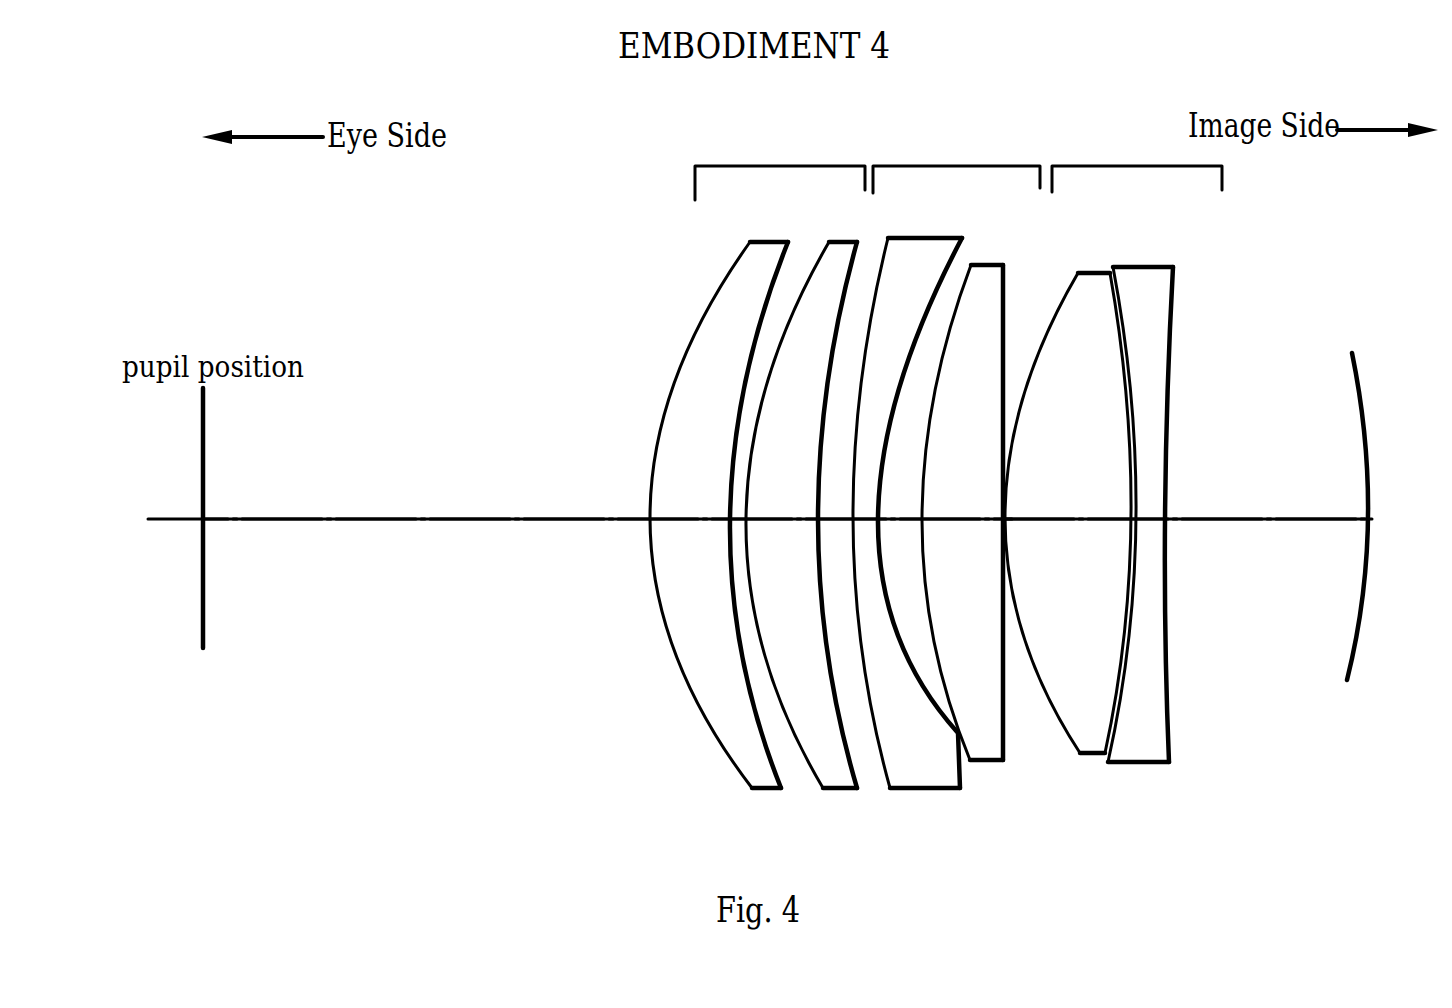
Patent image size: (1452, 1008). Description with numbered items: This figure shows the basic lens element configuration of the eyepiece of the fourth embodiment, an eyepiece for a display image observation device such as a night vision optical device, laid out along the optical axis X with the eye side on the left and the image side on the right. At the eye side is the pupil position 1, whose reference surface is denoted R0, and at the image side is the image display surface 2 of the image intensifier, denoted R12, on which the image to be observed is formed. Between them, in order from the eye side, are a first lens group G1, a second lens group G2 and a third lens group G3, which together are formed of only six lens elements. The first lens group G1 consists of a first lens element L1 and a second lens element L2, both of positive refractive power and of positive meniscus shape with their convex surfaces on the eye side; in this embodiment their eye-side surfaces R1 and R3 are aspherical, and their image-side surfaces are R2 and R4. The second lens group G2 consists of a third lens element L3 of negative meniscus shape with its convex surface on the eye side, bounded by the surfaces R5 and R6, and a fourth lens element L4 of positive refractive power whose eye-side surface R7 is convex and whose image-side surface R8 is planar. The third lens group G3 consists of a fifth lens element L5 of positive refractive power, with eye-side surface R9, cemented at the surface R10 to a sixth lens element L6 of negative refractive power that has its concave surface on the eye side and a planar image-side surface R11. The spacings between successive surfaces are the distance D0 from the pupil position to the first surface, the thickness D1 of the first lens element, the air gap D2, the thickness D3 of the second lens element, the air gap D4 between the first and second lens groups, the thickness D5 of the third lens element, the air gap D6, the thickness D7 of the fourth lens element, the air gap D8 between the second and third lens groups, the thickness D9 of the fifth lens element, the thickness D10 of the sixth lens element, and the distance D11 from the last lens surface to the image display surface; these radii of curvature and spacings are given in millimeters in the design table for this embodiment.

The pupil position (eye point) 1 is at (242, 513).
The image display surface 2 is at (1326, 516).
The optical axis X is at (500, 523).
The first lens group G1 is at (755, 454).
The second lens group G2 is at (953, 454).
The third lens group G3 is at (1125, 441).
The first lens element L1 is at (716, 486).
The second lens element L2 is at (803, 485).
The third lens element L3 is at (917, 483).
The fourth lens element L4 is at (988, 469).
The fifth lens element L5 is at (1125, 468).
The sixth lens element L6 is at (1177, 473).
The radius of curvature of the pupil-position surface R0 is at (206, 418).
The radius of curvature of the first surface R1 is at (705, 307).
The radius of curvature of the second surface R2 is at (763, 302).
The radius of curvature of the third surface R3 is at (808, 266).
The radius of curvature of the fourth surface R4 is at (850, 303).
The radius of curvature of the fifth surface R5 is at (873, 330).
The radius of curvature of the sixth surface R6 is at (892, 392).
The radius of curvature of the seventh surface R7 is at (943, 320).
The radius of curvature of the eighth surface R8 is at (1007, 290).
The radius of curvature of the ninth surface R9 is at (1058, 316).
The radius of curvature of the tenth surface R10 is at (1124, 321).
The radius of curvature of the eleventh surface R11 is at (1165, 367).
The radius of curvature of the image display surface R12 is at (1356, 390).
The spacing from pupil position to first surface D0 is at (363, 517).
The first surface spacing D1 is at (697, 515).
The second surface spacing D2 is at (727, 522).
The third surface spacing D3 is at (760, 515).
The fourth surface spacing D4 is at (820, 523).
The fifth surface spacing D5 is at (870, 512).
The sixth surface spacing D6 is at (895, 522).
The seventh surface spacing D7 is at (950, 515).
The eighth surface spacing D8 is at (1008, 514).
The ninth surface spacing D9 is at (1087, 520).
The tenth surface spacing D10 is at (1143, 514).
The eleventh surface spacing D11 is at (1288, 516).